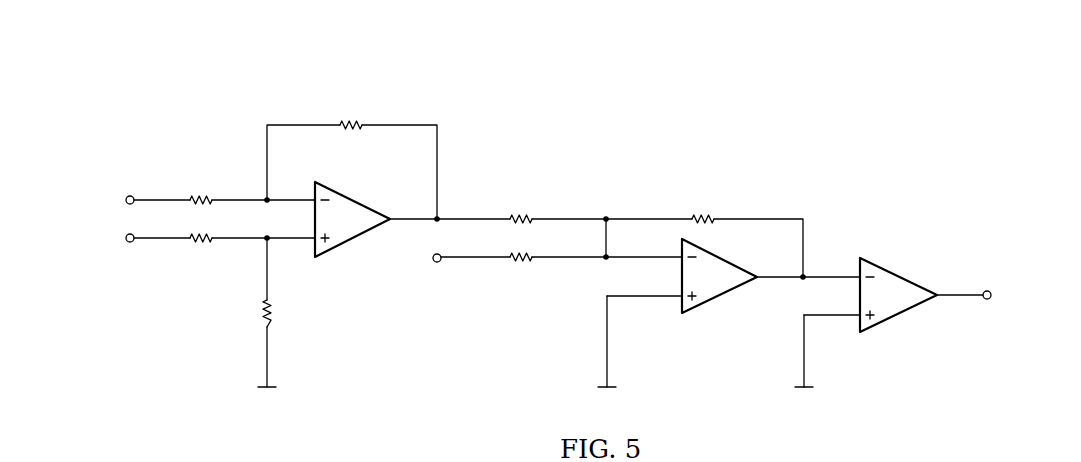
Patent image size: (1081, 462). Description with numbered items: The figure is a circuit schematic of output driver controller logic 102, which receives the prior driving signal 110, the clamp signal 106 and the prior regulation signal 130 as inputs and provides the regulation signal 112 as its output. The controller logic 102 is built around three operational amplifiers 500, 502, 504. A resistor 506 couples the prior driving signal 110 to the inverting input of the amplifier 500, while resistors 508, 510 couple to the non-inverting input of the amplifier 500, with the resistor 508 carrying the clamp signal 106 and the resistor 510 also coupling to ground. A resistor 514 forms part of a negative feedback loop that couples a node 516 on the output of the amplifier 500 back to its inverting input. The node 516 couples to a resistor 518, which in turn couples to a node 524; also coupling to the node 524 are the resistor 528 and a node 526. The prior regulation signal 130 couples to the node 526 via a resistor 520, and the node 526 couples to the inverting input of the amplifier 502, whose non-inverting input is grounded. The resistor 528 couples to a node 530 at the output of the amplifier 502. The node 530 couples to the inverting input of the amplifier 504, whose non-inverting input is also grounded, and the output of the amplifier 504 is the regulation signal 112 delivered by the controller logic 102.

The output driver controller logic 102 is at (658, 148).
The clamp signal 106 is at (129, 244).
The prior driving signal 110 is at (128, 195).
The regulation signal 112 is at (989, 290).
The prior regulation signal 130 is at (438, 262).
The operational amplifier 500 is at (355, 198).
The operational amplifier 502 is at (722, 297).
The operational amplifier 504 is at (899, 315).
The resistor 506 is at (197, 196).
The resistor 508 is at (196, 244).
The resistor 510 is at (263, 318).
The resistor 514 is at (349, 121).
The node 516 is at (433, 215).
The resistor 518 is at (520, 215).
The resistor 520 is at (519, 264).
The node 524 is at (603, 215).
The node 526 is at (603, 261).
The resistor 528 is at (706, 215).
The node 530 is at (807, 273).